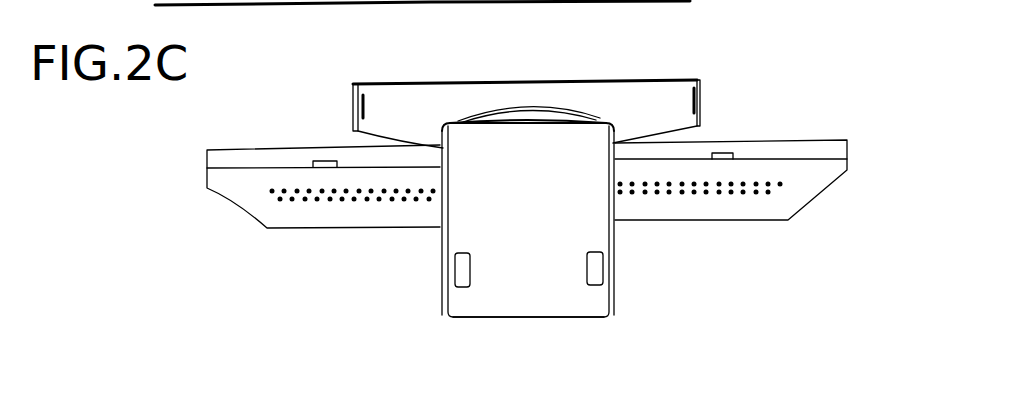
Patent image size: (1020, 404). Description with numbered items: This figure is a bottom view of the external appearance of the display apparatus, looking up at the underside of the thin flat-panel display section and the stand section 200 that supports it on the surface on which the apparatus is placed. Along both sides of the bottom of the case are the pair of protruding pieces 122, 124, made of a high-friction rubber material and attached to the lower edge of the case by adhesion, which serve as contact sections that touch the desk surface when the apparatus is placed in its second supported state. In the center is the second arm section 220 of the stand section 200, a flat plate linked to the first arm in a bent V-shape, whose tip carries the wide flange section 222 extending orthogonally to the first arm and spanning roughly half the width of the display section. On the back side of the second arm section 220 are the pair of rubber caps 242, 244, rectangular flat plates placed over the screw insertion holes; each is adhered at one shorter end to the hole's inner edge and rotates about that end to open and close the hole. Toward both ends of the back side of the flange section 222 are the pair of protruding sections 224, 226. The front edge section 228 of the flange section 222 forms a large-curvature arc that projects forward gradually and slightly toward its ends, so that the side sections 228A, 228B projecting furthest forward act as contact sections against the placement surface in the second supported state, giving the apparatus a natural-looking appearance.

The protruding piece 122 is at (740, 148).
The protruding piece 124 is at (318, 158).
The stand section 200 is at (532, 203).
The second arm section 220 is at (547, 302).
The flange section 222 is at (662, 118).
The protruding section 224 is at (693, 97).
The protruding section 226 is at (360, 107).
The front edge section 228 is at (520, 78).
The side section 228A is at (698, 80).
The side section 228B is at (356, 84).
The cap 242 is at (593, 270).
The cap 244 is at (460, 272).